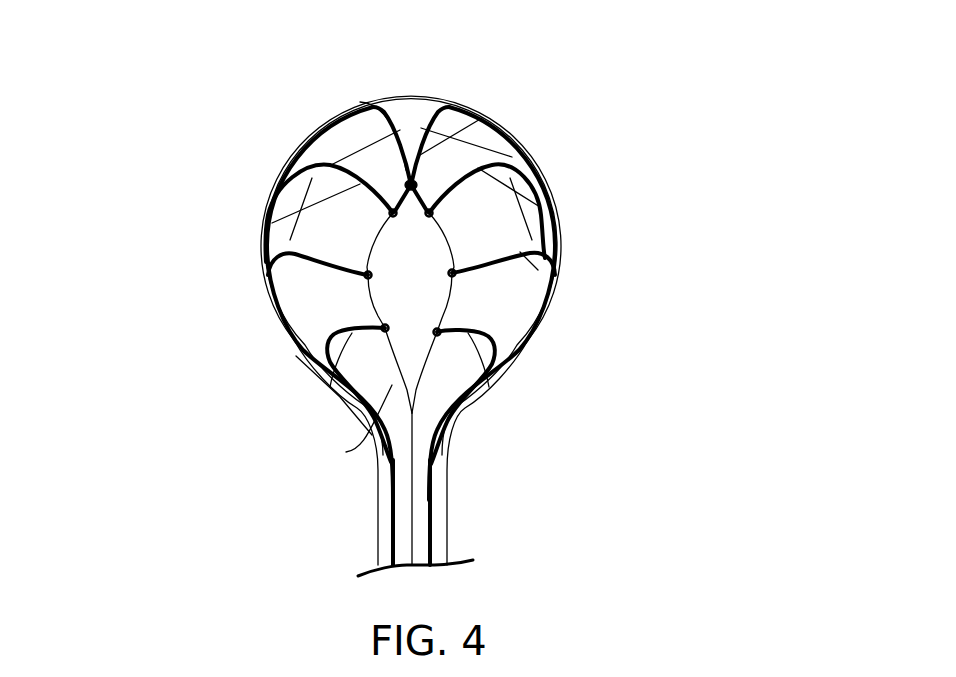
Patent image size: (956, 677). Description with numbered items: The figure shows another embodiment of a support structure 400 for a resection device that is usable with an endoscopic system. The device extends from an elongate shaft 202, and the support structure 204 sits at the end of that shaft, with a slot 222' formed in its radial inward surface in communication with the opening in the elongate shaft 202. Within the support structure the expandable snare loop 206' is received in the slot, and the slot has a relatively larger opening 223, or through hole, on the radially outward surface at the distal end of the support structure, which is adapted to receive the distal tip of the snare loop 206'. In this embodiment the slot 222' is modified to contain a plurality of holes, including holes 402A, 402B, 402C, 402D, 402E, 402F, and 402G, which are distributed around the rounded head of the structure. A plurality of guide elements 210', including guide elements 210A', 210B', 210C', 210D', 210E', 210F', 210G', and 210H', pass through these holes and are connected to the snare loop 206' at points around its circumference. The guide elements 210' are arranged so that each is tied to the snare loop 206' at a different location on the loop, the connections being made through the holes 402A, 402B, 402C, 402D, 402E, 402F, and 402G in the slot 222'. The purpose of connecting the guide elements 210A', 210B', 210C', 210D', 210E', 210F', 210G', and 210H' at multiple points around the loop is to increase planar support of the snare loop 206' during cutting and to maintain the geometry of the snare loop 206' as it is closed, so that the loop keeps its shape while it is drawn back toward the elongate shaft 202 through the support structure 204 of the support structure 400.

The support structure 400 is at (115, 153).
The elongate shaft 202 is at (447, 493).
The support structure 204 is at (552, 201).
The snare loop 206' is at (330, 423).
The guide elements 210' is at (386, 305).
The guide element 210A' is at (335, 131).
The guide element 210B' is at (496, 130).
The guide element 210C' is at (567, 204).
The guide element 210D' is at (585, 277).
The guide element 210E' is at (528, 378).
The guide element 210F' is at (286, 376).
The guide element 210G' is at (275, 382).
The guide element 210H' is at (267, 209).
The slot 222' is at (464, 277).
The opening 223 is at (400, 103).
The hole 402A is at (316, 346).
The hole 402B is at (286, 270).
The hole 402C is at (322, 161).
The hole 402D is at (412, 128).
The hole 402E is at (522, 152).
The hole 402F is at (556, 247).
The hole 402G is at (508, 360).